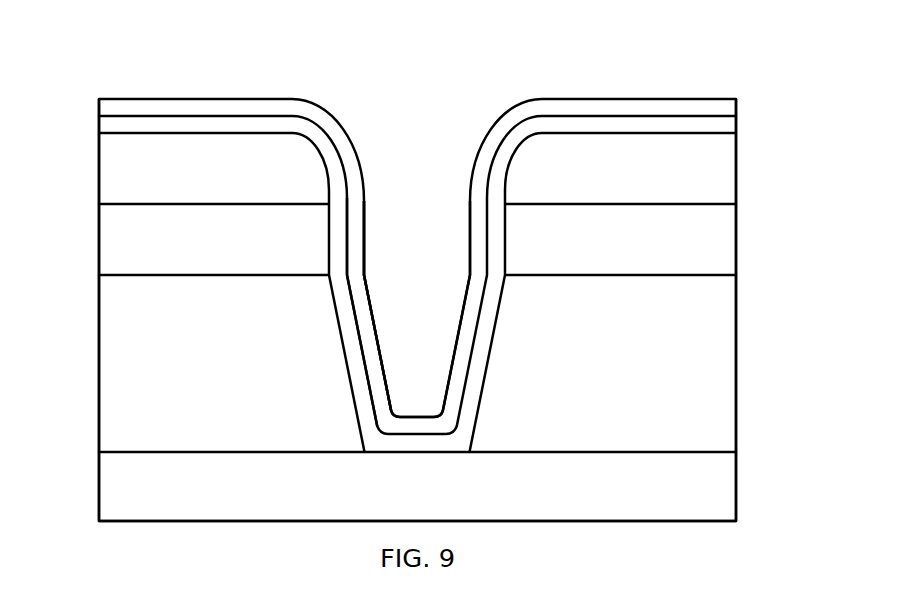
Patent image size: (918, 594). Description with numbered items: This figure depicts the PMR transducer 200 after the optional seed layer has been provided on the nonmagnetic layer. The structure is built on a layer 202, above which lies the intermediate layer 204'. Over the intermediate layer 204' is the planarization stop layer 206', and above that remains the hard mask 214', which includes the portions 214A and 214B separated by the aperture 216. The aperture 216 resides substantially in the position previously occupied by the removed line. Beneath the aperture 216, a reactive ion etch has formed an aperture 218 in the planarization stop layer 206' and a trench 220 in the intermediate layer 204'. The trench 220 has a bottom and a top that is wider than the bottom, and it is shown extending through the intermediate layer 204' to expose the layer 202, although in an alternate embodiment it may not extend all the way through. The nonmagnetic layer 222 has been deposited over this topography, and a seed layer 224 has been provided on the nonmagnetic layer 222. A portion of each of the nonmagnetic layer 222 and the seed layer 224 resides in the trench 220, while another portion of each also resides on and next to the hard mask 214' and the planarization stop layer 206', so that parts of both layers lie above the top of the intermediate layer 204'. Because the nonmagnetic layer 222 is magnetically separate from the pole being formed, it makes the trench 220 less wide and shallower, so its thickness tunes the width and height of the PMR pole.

The PMR transducer 200 is at (438, 48).
The layer 202 is at (737, 490).
The intermediate layer 204' is at (416, 363).
The planarization stop layer 206' is at (417, 239).
The portion of hard mask 214A is at (593, 133).
The portion of hard mask 214B is at (205, 133).
The hard mask 214' is at (464, 289).
The aperture 216 is at (443, 117).
The aperture 218 is at (383, 214).
The trench 220 is at (378, 281).
The nonmagnetic layer 222 is at (98, 125).
The seed layer 224 is at (737, 105).